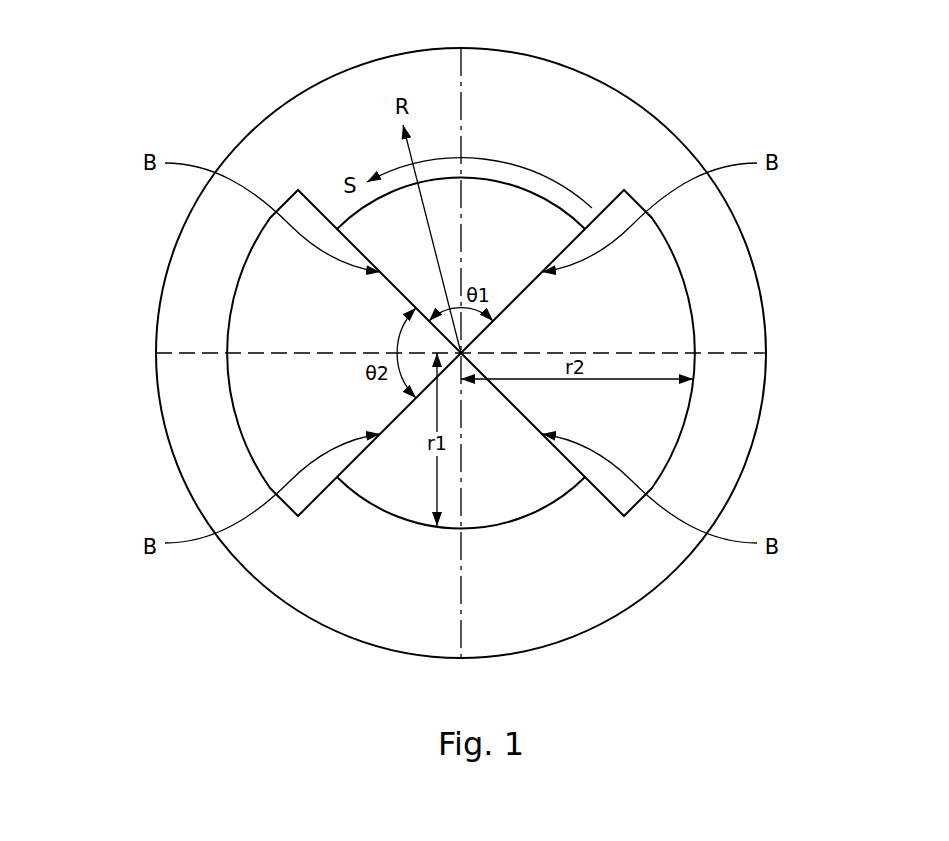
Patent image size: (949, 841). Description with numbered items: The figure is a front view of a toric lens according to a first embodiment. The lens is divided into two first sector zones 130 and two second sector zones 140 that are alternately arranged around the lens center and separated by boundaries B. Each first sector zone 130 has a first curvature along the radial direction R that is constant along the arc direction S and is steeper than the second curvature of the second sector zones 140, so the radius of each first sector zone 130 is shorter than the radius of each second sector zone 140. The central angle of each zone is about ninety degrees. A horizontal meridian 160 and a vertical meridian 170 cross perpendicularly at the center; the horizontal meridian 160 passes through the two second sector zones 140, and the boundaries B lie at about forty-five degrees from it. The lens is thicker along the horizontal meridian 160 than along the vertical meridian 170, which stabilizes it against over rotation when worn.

The first sector zone 130 is at (496, 253).
The second sector zone 140 is at (289, 303).
The horizontal meridian 160 is at (729, 356).
The vertical meridian 170 is at (463, 110).